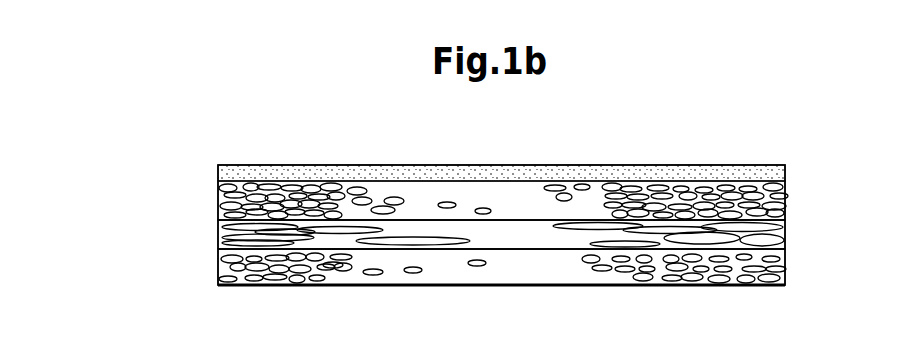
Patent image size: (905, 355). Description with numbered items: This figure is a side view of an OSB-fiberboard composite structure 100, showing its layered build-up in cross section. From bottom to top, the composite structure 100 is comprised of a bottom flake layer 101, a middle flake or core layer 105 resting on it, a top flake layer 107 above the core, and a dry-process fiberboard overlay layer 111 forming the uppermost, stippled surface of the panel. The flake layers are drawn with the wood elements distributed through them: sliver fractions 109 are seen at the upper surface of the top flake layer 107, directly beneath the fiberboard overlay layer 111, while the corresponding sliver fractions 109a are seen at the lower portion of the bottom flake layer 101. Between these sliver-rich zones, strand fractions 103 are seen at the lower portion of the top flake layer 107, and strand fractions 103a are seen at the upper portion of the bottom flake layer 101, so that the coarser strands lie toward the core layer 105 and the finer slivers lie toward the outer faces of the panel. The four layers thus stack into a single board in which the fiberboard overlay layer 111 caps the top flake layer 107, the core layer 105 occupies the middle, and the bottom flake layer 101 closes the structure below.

The OSB-fiberboard composite structure 100 is at (567, 149).
The bottom flake layer 101 is at (785, 258).
The strand fraction 103 is at (218, 256).
The strand fraction 103a is at (220, 212).
The middle flake or core layer 105 is at (785, 238).
The top flake layer 107 is at (785, 198).
The sliver fraction 109 is at (218, 188).
The sliver fraction 109a is at (218, 270).
The dry-process fiberboard overlay layer 111 is at (785, 168).